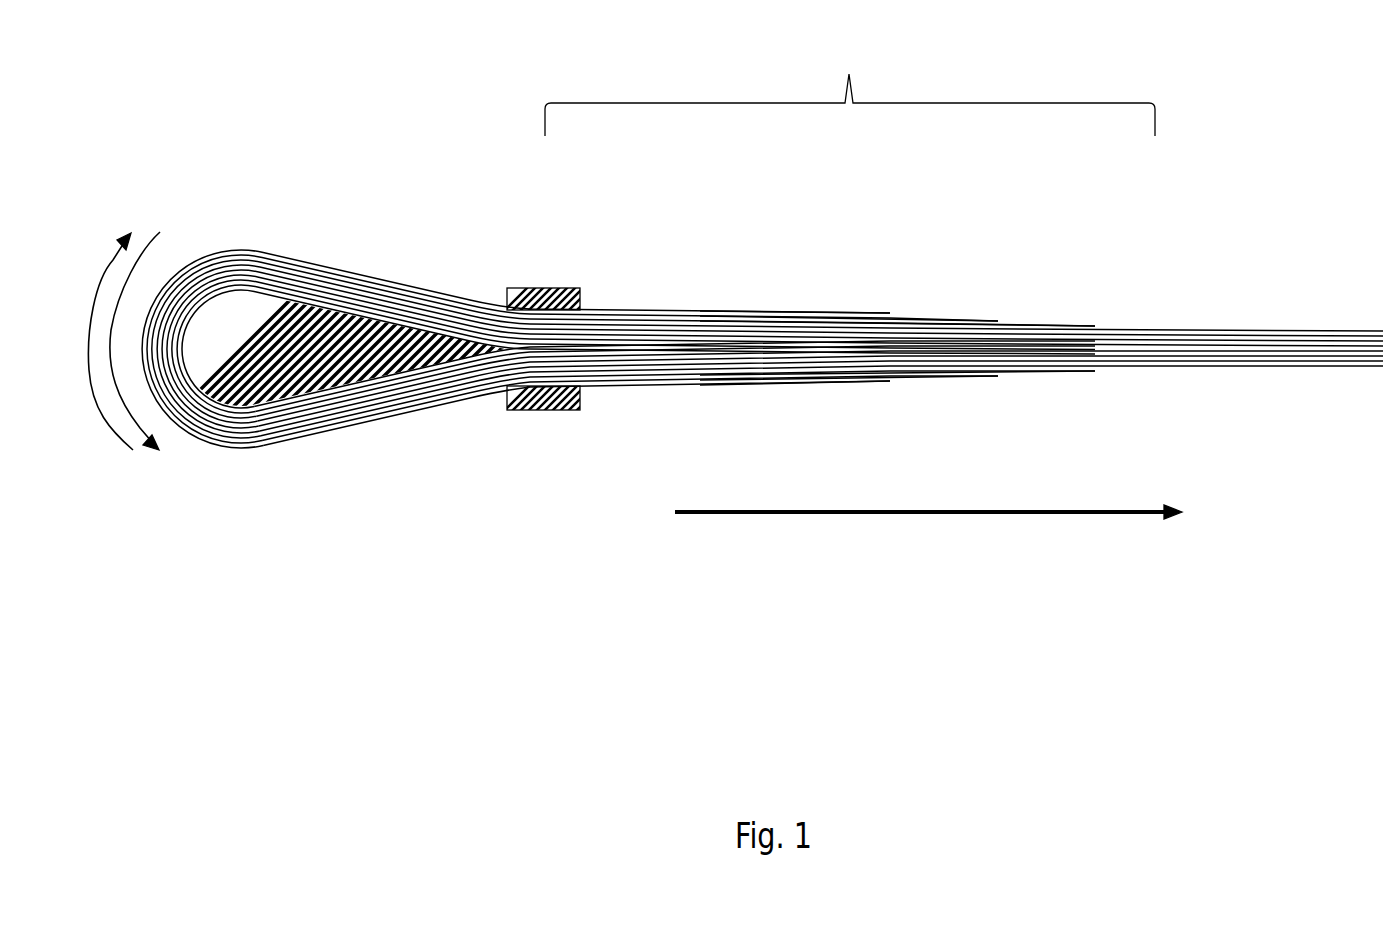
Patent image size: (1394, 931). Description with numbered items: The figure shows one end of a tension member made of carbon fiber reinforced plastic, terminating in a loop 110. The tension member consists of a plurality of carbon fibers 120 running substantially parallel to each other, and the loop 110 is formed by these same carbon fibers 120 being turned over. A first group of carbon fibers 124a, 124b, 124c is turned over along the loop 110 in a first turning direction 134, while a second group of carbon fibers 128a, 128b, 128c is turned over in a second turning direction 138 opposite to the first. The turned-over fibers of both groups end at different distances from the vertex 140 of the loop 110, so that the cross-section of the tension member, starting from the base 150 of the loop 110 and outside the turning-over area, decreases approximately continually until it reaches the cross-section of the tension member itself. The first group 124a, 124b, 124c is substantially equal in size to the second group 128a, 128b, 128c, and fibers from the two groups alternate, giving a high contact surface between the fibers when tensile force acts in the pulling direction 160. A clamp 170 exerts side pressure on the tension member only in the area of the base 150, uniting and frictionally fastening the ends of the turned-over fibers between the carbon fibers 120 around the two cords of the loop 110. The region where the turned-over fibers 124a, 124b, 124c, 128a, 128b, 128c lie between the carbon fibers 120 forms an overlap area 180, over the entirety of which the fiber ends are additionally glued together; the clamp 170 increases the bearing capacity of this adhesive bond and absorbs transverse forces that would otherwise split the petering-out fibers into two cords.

The loop 110 is at (337, 267).
The carbon fibers 120 is at (1263, 345).
The carbon fiber of first group 124a is at (898, 338).
The carbon fiber of first group 124b is at (1000, 332).
The carbon fiber of first group 124c is at (1093, 323).
The carbon fiber of second group 128a is at (897, 350).
The carbon fiber of second group 128b is at (1000, 352).
The carbon fiber of second group 128c is at (1090, 372).
The first turning direction 134 is at (103, 255).
The second turning direction 138 is at (143, 440).
The vertex of the loop 140 is at (143, 332).
The base of the loop 150 is at (418, 372).
The pulling direction 160 is at (892, 515).
The clamp 170 is at (565, 287).
The overlap area 180 is at (850, 74).